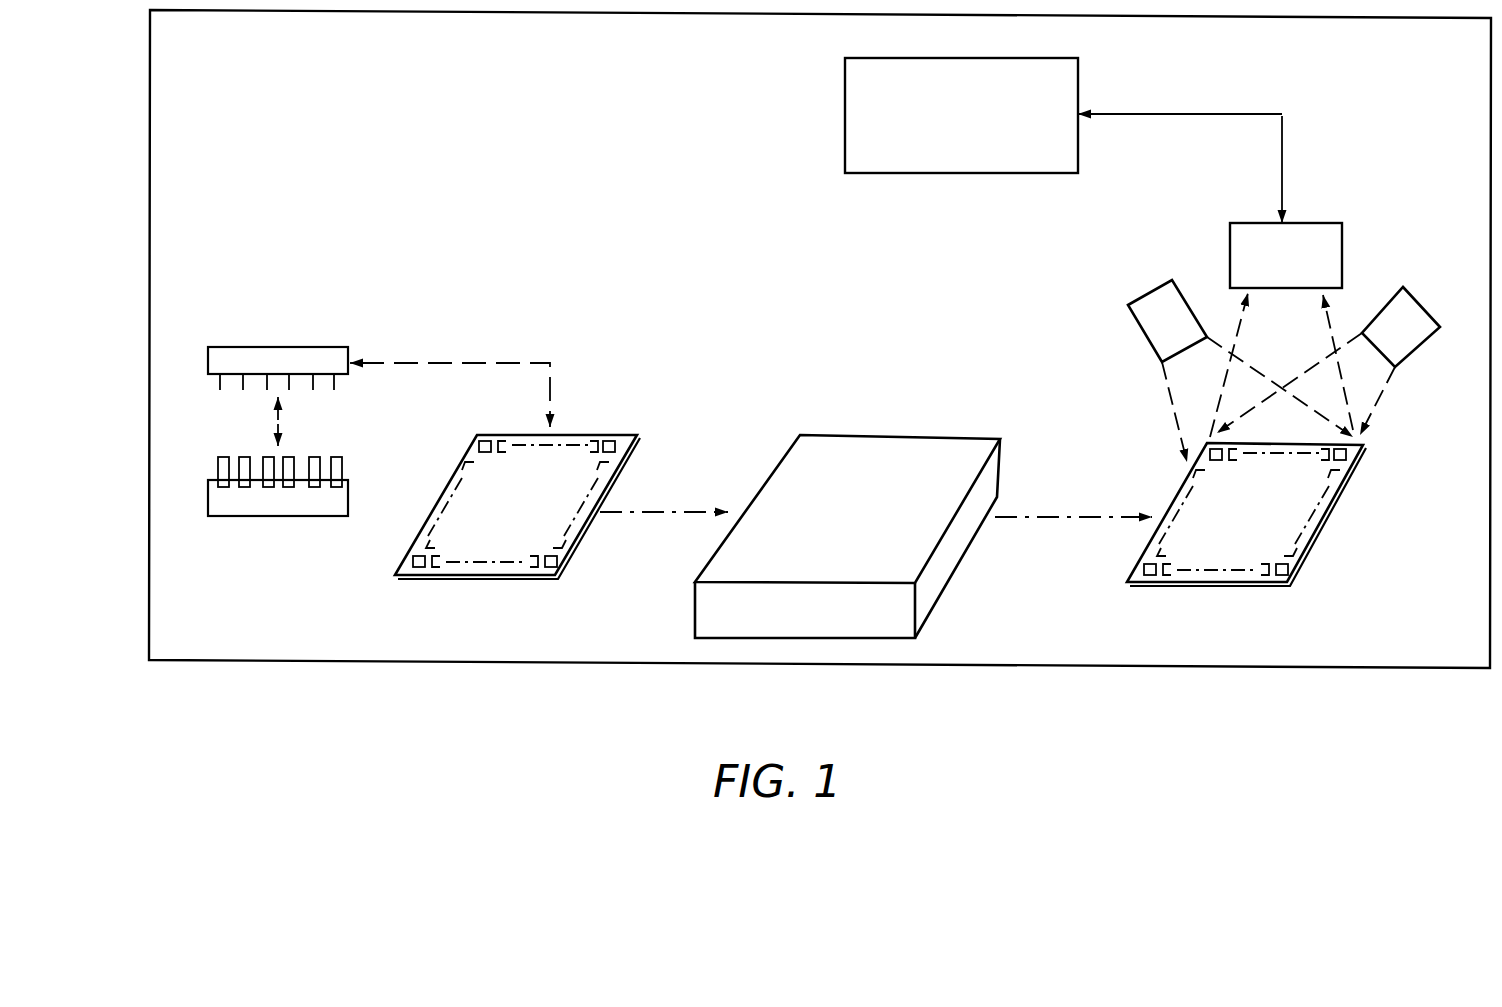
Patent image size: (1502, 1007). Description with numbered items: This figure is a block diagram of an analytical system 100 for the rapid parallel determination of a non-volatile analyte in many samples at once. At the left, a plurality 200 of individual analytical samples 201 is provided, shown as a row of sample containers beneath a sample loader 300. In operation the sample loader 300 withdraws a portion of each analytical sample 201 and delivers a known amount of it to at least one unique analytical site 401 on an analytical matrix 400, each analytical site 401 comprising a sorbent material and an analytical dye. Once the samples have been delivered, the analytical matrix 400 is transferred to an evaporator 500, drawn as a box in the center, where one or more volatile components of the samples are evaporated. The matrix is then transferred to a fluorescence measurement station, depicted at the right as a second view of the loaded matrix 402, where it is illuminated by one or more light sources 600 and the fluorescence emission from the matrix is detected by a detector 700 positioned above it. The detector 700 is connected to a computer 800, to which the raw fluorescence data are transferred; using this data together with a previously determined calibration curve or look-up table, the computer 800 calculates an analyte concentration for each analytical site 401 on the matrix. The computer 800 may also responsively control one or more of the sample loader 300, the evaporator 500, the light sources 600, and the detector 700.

The analytical system 100 is at (470, 663).
The plurality of individual analytical samples 200 is at (290, 518).
The analytical sample 201 is at (250, 457).
The sample loader 300 is at (307, 347).
The analytical matrix 400 is at (497, 577).
The analytical site 401 is at (495, 417).
The inspected circuit board 402 is at (1246, 514).
The evaporator 500 is at (925, 442).
The light source 600 is at (1147, 341).
The detector 700 is at (1263, 225).
The computer 800 is at (845, 128).